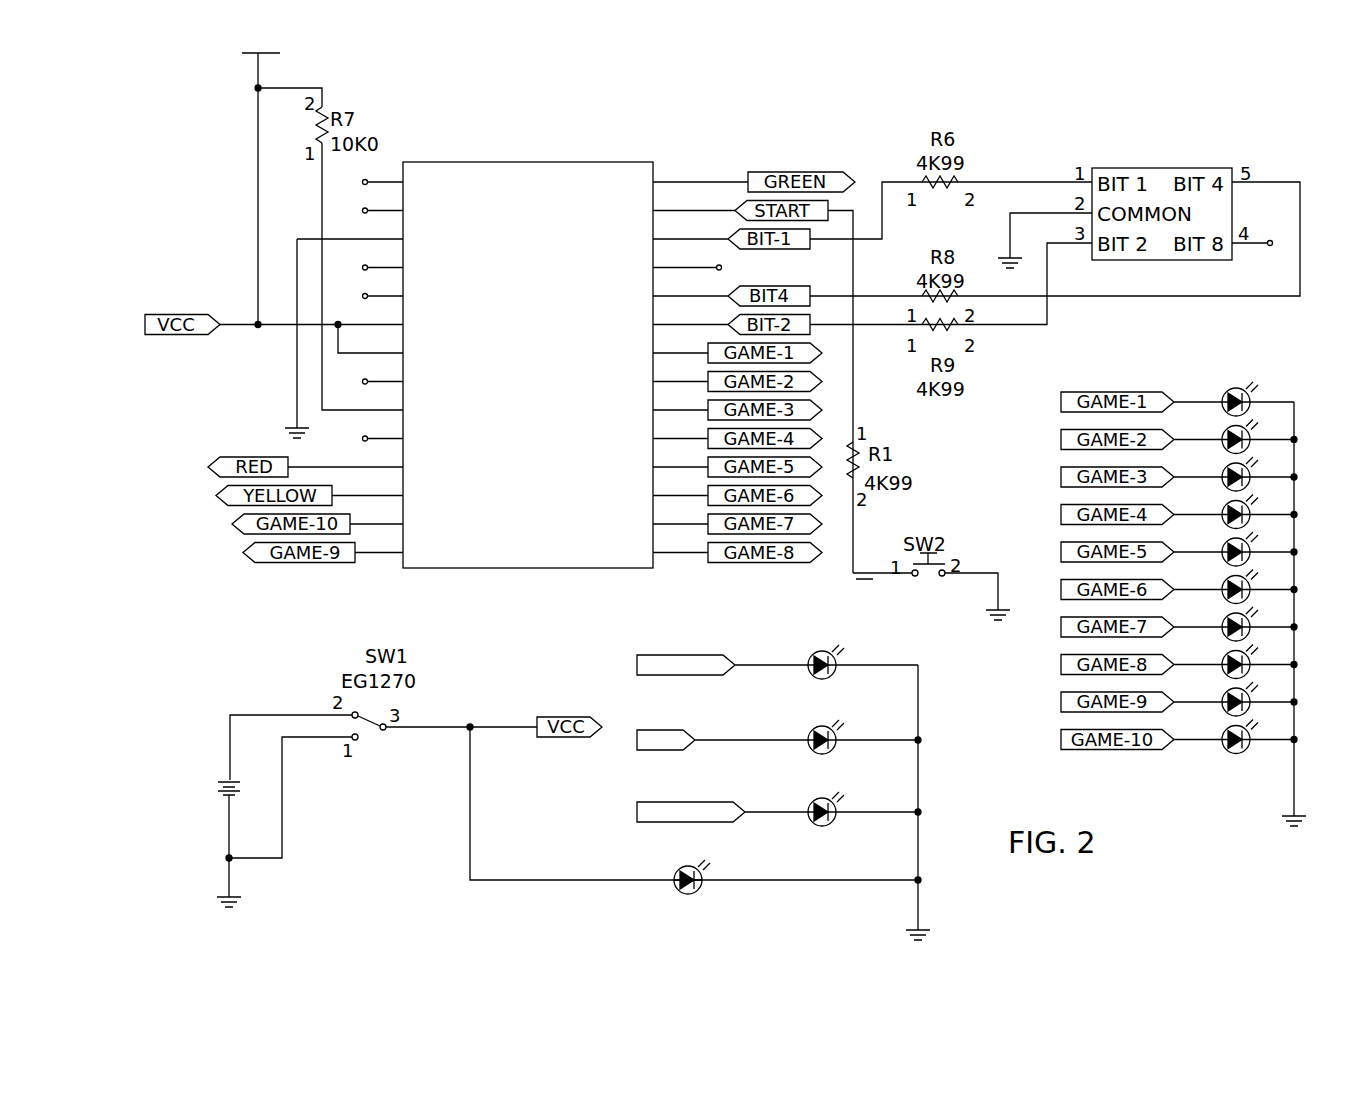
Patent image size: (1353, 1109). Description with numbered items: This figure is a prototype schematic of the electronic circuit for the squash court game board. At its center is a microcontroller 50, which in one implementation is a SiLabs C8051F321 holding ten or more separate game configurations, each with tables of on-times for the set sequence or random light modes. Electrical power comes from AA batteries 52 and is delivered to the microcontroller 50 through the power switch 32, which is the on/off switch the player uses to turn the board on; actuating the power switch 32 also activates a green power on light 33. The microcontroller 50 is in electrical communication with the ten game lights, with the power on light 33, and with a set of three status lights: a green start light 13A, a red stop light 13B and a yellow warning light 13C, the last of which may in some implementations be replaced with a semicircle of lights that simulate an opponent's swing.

The microcontroller 50 is at (533, 162).
The AA batteries 52 is at (270, 834).
The on/off switch 32 is at (470, 724).
The green power on light 33 is at (676, 893).
The green start light 13A is at (809, 652).
The red stop light 13B is at (809, 727).
The yellow warning light 13C is at (809, 799).